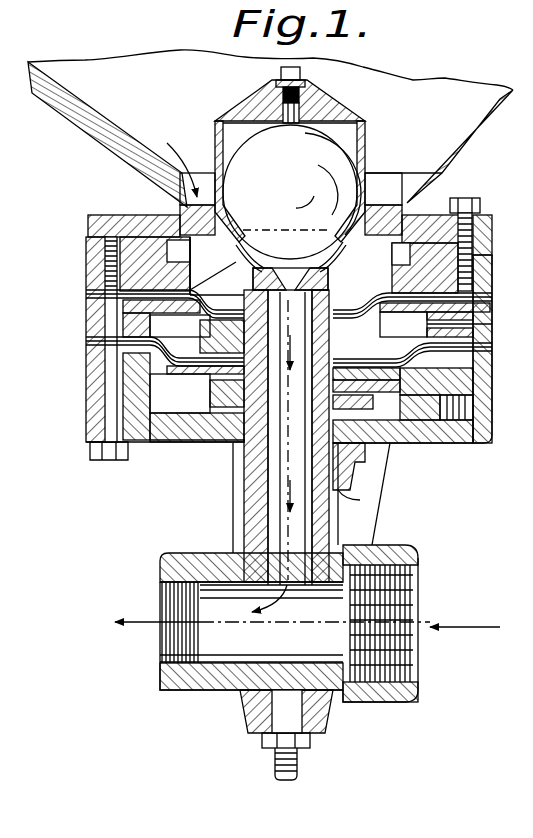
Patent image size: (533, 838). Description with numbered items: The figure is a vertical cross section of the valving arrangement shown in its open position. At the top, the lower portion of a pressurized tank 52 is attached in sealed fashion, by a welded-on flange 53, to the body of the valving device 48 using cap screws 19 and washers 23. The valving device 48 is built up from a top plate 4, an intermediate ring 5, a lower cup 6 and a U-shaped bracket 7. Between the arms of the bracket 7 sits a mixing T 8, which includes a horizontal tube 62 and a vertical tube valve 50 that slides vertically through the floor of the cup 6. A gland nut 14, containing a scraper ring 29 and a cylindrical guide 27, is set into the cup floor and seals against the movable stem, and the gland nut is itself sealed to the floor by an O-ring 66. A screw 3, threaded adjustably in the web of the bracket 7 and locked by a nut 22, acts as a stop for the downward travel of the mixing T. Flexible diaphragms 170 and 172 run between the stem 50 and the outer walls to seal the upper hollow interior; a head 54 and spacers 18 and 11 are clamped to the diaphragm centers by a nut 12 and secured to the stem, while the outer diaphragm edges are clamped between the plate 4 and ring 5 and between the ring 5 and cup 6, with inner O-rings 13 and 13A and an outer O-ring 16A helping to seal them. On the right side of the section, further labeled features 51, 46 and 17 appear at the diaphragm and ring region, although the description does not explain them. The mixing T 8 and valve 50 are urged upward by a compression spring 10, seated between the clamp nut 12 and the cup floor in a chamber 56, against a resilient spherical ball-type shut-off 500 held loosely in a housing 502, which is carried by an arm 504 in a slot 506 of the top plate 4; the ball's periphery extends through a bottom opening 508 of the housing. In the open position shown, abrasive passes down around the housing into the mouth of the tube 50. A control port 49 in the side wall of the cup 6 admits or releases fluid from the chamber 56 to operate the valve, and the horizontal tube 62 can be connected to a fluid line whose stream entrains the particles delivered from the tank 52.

The screw 3 is at (262, 698).
The top plate 4 is at (494, 264).
The intermediate ring 5 is at (494, 245).
The lower cup 6 is at (494, 368).
The U-shaped bracket 7 is at (247, 733).
The mixing T 8 is at (420, 594).
The compression spring 10 is at (358, 414).
The spacer 11 is at (182, 375).
The nut 12 is at (216, 400).
The inner O-ring 13 is at (315, 270).
The inner O-ring 13A is at (370, 387).
The gland nut 14 is at (372, 483).
The outer O-ring 16A is at (120, 358).
The right lower diaphragm 17 is at (494, 347).
The spacer 18 is at (212, 320).
The cap screws 19 is at (466, 198).
The nut 22 is at (300, 745).
The washers 23 is at (480, 210).
The cylindrical guide 27 is at (343, 497).
The scraper ring 29 is at (365, 460).
The pressure passage 46 is at (494, 324).
The valving device 48 is at (486, 443).
The control port 49 is at (490, 402).
The vertical tube valve 50 is at (233, 527).
The right upper diaphragm 51 is at (494, 300).
The tank 52 is at (84, 143).
The flange 53 is at (405, 220).
The head 54 is at (240, 273).
The chamber 56 is at (158, 416).
The horizontal tube 62 is at (362, 702).
The O-ring 66 is at (210, 453).
The flexible diaphragm 170 is at (86, 296).
The flexible diaphragm 172 is at (86, 343).
The ball-type valve shut-off 500 is at (327, 168).
The housing 502 is at (263, 110).
The arm 504 is at (180, 192).
The slot 506 is at (100, 250).
The bottom opening 508 is at (325, 242).